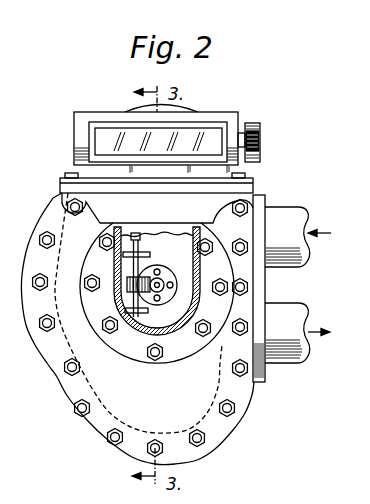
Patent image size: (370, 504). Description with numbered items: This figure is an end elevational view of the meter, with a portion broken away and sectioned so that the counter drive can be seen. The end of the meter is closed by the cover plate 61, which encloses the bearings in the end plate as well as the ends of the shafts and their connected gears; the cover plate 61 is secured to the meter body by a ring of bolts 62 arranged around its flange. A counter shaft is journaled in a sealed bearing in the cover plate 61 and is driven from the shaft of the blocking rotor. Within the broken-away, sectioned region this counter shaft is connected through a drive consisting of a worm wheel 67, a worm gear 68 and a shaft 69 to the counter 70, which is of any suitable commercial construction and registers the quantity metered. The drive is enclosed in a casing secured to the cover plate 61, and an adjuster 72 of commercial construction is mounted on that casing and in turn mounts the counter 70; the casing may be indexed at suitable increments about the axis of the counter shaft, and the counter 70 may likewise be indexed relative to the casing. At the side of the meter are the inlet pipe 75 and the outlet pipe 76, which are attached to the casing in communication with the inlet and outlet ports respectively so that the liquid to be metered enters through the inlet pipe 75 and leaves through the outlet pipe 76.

The cover plate 61 is at (122, 402).
The bolts 62 is at (228, 414).
The worm wheel 67 is at (167, 295).
The worm gear 68 is at (125, 283).
The shaft 69 is at (140, 243).
The counter 70 is at (229, 112).
The adjuster 72 is at (100, 197).
The inlet pipe 75 is at (288, 213).
The outlet pipe 76 is at (291, 308).